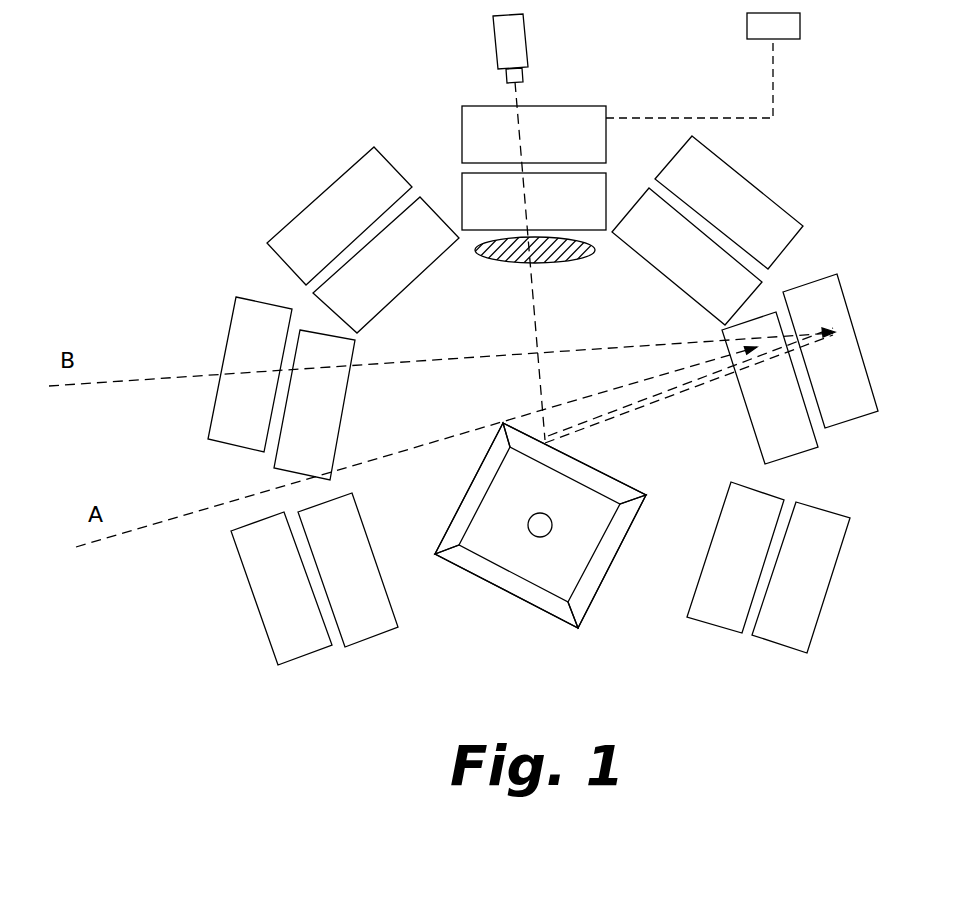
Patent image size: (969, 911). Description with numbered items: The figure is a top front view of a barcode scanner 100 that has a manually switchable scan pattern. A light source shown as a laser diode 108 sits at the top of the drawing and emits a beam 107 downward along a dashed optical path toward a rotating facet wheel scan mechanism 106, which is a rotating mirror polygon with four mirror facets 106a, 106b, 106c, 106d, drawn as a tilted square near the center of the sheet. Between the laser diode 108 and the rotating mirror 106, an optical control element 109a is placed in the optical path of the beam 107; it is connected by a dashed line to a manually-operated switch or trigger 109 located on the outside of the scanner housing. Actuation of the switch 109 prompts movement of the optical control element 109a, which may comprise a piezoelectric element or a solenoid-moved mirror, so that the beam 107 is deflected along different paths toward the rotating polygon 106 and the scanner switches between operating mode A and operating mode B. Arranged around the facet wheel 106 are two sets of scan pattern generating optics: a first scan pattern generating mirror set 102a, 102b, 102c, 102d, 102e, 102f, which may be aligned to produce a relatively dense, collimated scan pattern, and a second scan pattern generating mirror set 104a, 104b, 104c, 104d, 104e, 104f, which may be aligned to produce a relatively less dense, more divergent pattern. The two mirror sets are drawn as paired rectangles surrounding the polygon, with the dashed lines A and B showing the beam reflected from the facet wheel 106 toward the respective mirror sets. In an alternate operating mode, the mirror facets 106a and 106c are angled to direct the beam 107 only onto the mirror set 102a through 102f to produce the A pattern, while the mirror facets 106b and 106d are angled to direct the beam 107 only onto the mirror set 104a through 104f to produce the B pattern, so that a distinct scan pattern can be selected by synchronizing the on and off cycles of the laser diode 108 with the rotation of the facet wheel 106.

The barcode scanner 100 is at (313, 113).
The first scan pattern generating mirror set mirror 102a is at (392, 283).
The first scan pattern generating mirror set mirror 102b is at (331, 399).
The first scan pattern generating mirror set mirror 102c is at (362, 622).
The first scan pattern generating mirror set mirror 102d is at (716, 608).
The first scan pattern generating mirror set mirror 102e is at (772, 448).
The first scan pattern generating mirror set mirror 102f is at (702, 285).
The second scan pattern generating mirror set mirror 104a is at (350, 192).
The second scan pattern generating mirror set mirror 104b is at (243, 348).
The second scan pattern generating mirror set mirror 104c is at (275, 606).
The second scan pattern generating mirror set mirror 104d is at (807, 594).
The second scan pattern generating mirror set mirror 104e is at (832, 300).
The second scan pattern generating mirror set mirror 104f is at (745, 200).
The rotating facet wheel scan mechanism 106 is at (528, 547).
The mirror facet 106a is at (542, 600).
The mirror facet 106b is at (590, 590).
The mirror facet 106c is at (585, 470).
The mirror facet 106d is at (470, 505).
The beam 107 is at (513, 100).
The laser diode 108 is at (515, 43).
The switch 109 is at (748, 28).
The optical control element 109a is at (563, 106).